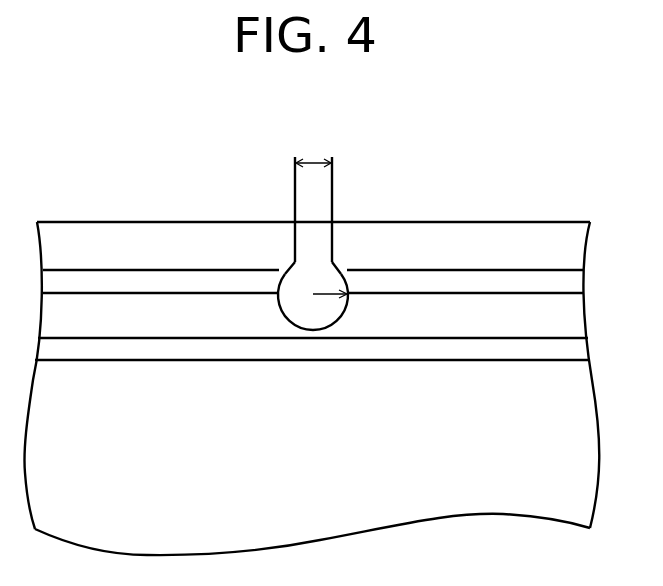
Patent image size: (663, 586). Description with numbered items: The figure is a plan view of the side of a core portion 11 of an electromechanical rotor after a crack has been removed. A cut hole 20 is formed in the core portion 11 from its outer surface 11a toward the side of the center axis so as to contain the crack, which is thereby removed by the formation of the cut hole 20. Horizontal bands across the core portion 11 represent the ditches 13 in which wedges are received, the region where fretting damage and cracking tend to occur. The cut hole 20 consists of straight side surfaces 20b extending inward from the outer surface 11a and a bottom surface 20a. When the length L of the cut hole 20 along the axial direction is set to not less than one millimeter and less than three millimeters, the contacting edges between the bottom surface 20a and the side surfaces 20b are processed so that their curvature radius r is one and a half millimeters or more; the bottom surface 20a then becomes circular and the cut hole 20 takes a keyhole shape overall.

The core portion 11 is at (535, 238).
The outer surface 11a is at (380, 220).
The ditch 13 is at (566, 318).
The cut hole 20 is at (310, 253).
The bottom surface 20a is at (286, 320).
The side surface 20b is at (296, 260).